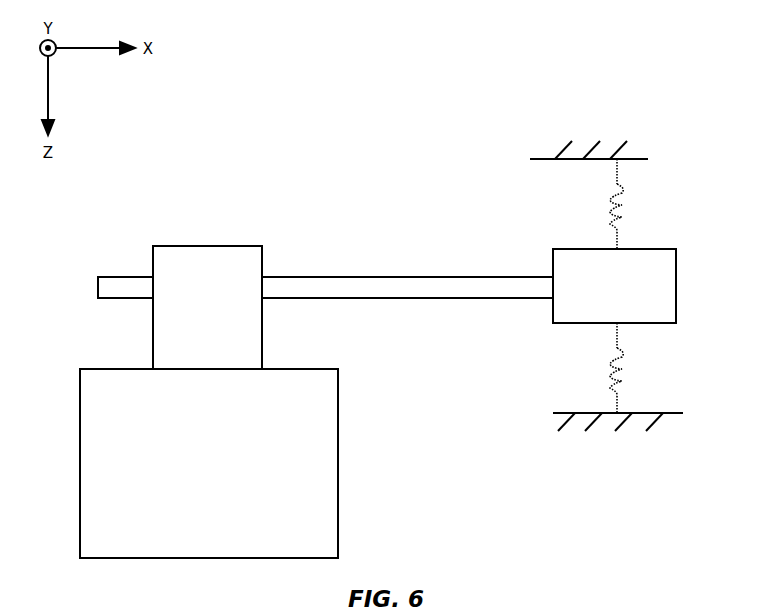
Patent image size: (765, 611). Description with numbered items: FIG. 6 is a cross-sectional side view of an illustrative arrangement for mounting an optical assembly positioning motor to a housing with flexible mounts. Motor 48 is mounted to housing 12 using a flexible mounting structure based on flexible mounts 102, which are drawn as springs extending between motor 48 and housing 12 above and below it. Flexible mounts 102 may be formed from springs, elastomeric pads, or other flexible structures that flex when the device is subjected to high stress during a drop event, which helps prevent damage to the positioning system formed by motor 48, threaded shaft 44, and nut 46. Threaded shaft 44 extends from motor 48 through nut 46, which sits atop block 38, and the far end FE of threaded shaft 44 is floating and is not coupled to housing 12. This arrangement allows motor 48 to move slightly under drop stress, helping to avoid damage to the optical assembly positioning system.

The housing 12 is at (628, 161).
The flexible mounts 102 is at (627, 208).
The motor 48 is at (668, 285).
The threaded shaft 44 is at (410, 283).
The nut 46 is at (257, 327).
The base block 38 is at (325, 465).
The far end FE is at (98, 284).